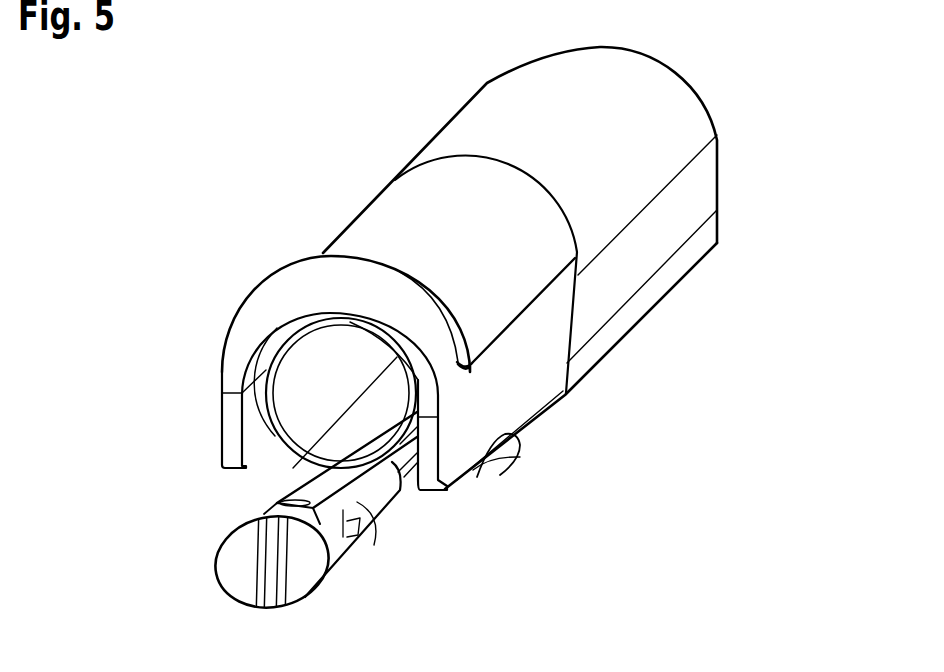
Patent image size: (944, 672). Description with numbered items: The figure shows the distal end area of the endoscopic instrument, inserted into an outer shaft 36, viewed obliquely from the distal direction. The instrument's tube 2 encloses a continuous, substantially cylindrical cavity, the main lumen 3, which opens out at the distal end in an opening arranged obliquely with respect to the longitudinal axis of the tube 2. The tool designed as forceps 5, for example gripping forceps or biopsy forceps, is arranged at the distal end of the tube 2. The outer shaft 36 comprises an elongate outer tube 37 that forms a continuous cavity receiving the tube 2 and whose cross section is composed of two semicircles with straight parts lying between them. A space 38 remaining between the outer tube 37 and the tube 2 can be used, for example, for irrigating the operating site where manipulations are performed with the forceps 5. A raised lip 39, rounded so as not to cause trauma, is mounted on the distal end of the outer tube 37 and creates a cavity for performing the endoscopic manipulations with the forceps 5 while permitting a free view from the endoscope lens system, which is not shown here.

The tube 2 is at (292, 452).
The main lumen 3 is at (290, 400).
The forceps 5 is at (410, 585).
The outer shaft 36 is at (675, 388).
The outer tube 37 is at (665, 285).
The space 38 is at (407, 473).
The raised lip 39 is at (290, 290).